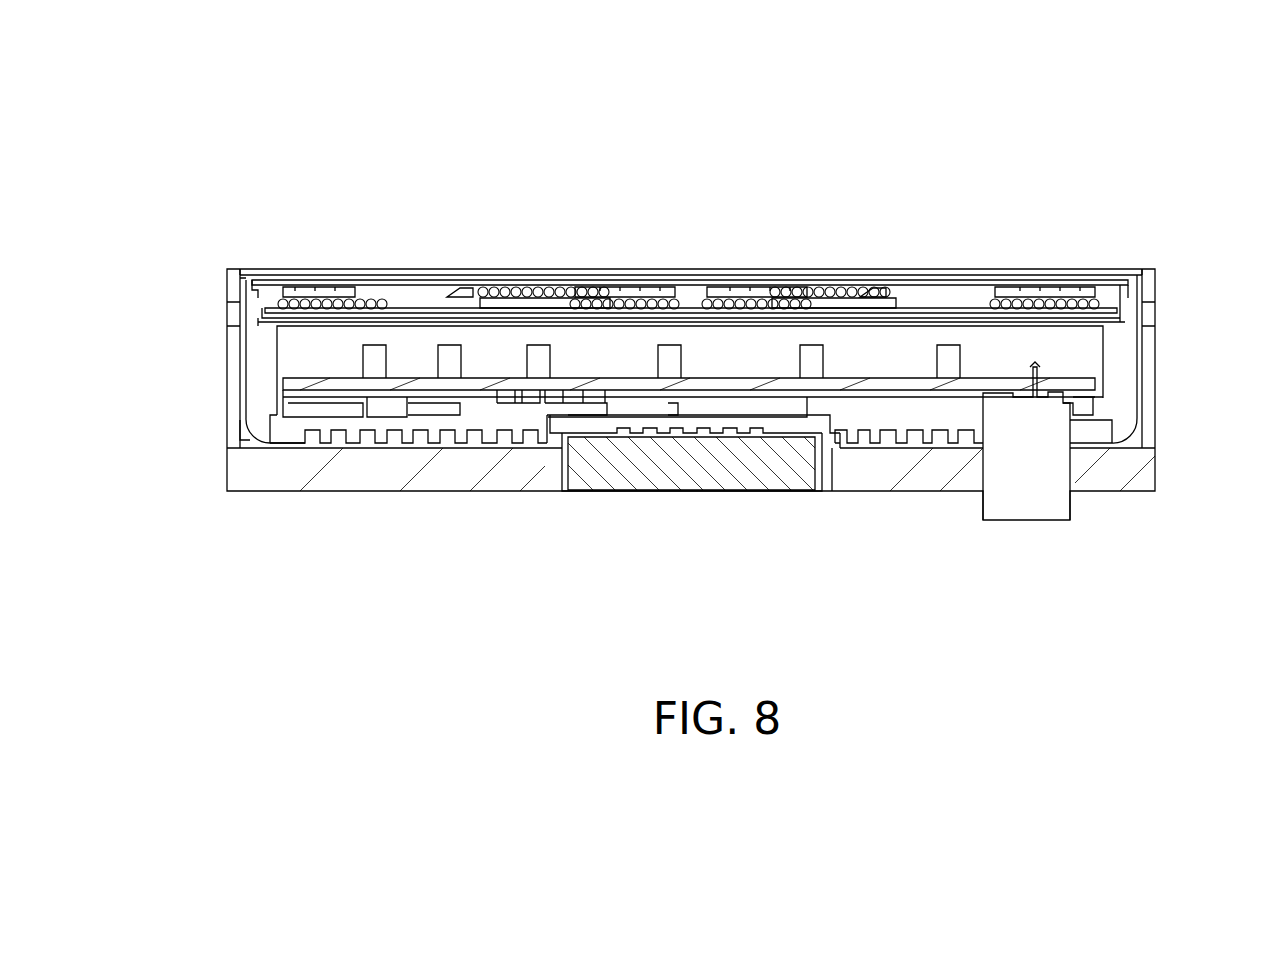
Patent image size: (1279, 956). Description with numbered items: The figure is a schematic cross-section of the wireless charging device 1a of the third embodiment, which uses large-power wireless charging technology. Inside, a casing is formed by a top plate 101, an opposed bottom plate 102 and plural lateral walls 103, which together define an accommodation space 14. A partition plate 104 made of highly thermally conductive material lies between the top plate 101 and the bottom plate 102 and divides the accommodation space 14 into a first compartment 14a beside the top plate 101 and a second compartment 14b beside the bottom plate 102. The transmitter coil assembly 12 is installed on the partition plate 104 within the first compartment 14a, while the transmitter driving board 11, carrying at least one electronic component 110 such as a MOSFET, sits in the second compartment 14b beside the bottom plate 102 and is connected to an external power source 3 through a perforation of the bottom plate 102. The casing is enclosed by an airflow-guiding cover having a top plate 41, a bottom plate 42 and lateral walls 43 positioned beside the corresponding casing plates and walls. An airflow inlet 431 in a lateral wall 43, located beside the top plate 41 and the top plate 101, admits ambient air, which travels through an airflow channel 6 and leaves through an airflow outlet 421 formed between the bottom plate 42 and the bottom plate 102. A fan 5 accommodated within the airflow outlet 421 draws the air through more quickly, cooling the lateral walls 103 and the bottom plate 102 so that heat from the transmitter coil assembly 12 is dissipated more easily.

The wireless charging device 1a is at (1189, 91).
The airflow inlet 431 is at (214, 313).
The airflow channel 6 is at (243, 292).
The top plate 101 is at (343, 274).
The partition plate 104 is at (430, 324).
The transmitter coil assembly 12 is at (530, 300).
The electronic component 110 is at (667, 356).
The top plate 41 is at (1095, 273).
The lateral walls 103 is at (1128, 323).
The transmitter driving board 11 is at (1080, 386).
The lateral walls 43 is at (1145, 432).
The bottom plate 42 is at (1143, 473).
The external power source 3 is at (1060, 510).
The accommodation space 14 is at (152, 355).
The first compartment 14a is at (242, 318).
The second compartment 14b is at (272, 415).
The bottom plate 102 is at (380, 433).
The airflow outlet 421 is at (567, 477).
The fan 5 is at (720, 472).